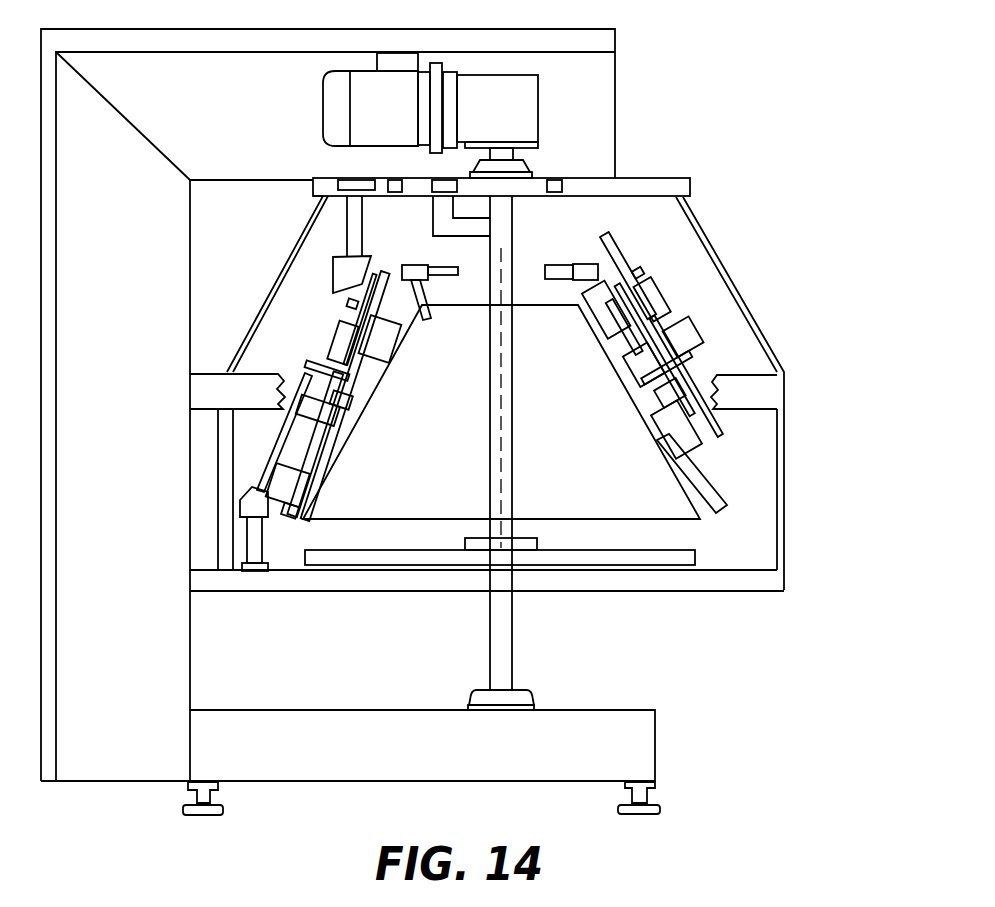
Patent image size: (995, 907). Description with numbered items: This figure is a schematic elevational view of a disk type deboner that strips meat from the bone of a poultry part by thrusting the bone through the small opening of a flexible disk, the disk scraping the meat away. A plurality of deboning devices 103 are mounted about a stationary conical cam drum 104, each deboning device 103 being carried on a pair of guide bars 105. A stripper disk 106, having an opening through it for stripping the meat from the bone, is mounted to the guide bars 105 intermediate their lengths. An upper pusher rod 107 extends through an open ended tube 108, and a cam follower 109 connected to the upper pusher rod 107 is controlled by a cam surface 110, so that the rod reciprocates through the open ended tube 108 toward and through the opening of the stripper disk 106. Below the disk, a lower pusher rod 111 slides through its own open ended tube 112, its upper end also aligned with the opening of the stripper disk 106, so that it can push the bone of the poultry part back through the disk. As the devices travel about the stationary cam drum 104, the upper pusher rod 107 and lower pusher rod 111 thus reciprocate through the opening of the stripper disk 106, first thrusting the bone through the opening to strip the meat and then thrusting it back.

The deboning device 103 is at (395, 256).
The stationary conical cam drum 104 is at (630, 505).
The guide bar 105 is at (318, 447).
The stripper disk 106 is at (310, 363).
The upper pusher rod 107 is at (377, 280).
The open ended tube 108 is at (337, 338).
The cam follower 109 is at (352, 302).
The cam surface 110 is at (347, 273).
The lower pusher rod 111 is at (277, 447).
The open ended tube 112 is at (283, 394).